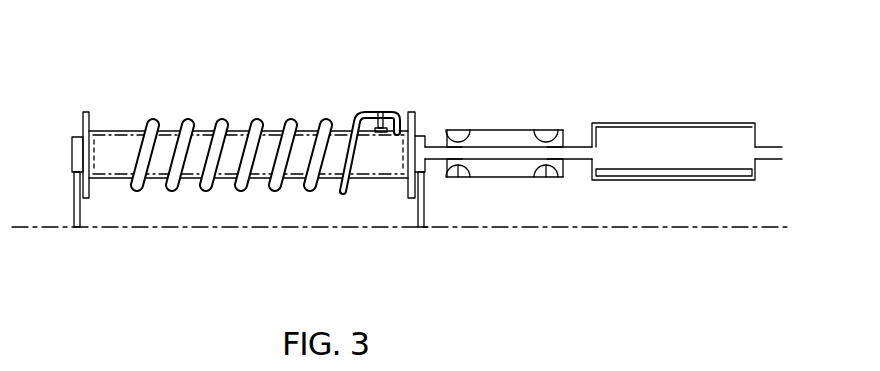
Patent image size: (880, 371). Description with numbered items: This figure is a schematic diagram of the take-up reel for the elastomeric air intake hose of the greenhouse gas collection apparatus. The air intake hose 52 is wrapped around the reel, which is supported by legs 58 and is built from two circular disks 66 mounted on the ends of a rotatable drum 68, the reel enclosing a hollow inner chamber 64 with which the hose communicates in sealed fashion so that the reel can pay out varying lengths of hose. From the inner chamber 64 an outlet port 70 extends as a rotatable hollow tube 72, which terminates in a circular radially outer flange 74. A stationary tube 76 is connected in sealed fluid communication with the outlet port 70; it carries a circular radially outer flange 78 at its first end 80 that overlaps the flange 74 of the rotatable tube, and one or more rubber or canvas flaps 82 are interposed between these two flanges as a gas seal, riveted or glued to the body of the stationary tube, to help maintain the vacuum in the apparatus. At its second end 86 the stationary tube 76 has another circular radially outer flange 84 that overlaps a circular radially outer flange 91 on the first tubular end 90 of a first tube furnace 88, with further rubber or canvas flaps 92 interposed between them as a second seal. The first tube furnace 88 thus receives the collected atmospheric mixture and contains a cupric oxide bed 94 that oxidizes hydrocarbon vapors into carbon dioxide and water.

The air intake hose 52 is at (254, 121).
The legs 58 is at (80, 220).
The hollow inner chamber 64 is at (124, 148).
The circular disks 66 is at (86, 110).
The rotatable drum 68 is at (187, 192).
The outlet port 70 is at (392, 153).
The rotatable hollow tube 72 is at (440, 140).
The circular radially outer flange 74 is at (458, 142).
The stationary tube 76 is at (520, 100).
The circular radially outer flange 78 is at (437, 135).
The first end 80 is at (426, 173).
The rubber or canvas flaps 82 is at (461, 178).
The circular radially outer flange 84 is at (576, 145).
The second end 86 is at (563, 178).
The first tube furnace 88 is at (679, 100).
The first tubular end 90 is at (584, 147).
The circular radially outer flange 91 is at (546, 142).
The rubber or canvas flaps 92 is at (548, 178).
The cupric oxide bed 94 is at (674, 162).